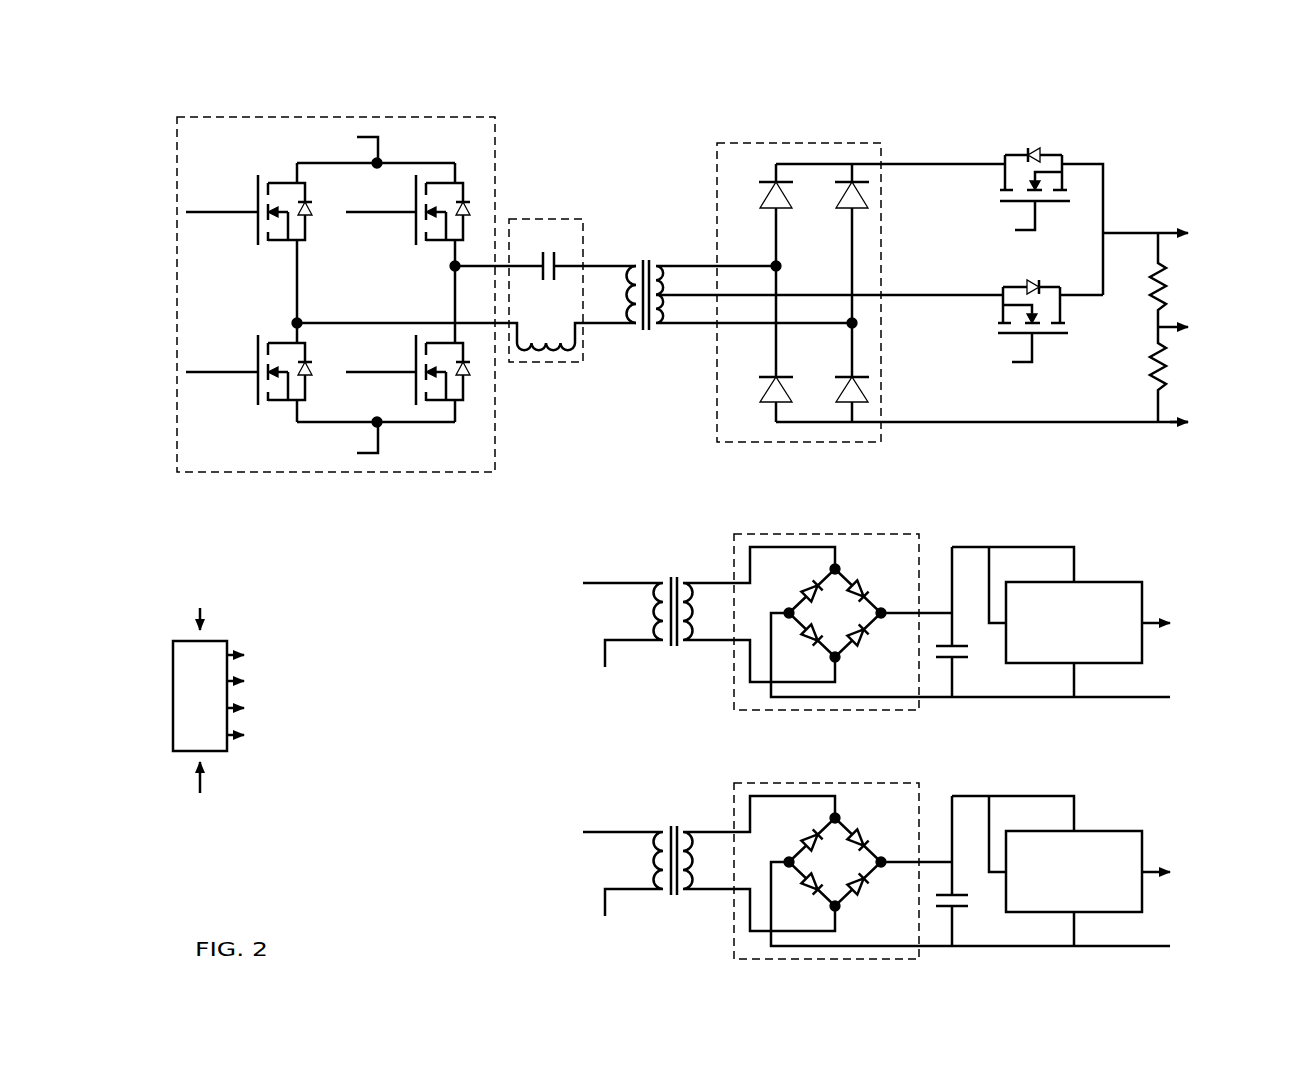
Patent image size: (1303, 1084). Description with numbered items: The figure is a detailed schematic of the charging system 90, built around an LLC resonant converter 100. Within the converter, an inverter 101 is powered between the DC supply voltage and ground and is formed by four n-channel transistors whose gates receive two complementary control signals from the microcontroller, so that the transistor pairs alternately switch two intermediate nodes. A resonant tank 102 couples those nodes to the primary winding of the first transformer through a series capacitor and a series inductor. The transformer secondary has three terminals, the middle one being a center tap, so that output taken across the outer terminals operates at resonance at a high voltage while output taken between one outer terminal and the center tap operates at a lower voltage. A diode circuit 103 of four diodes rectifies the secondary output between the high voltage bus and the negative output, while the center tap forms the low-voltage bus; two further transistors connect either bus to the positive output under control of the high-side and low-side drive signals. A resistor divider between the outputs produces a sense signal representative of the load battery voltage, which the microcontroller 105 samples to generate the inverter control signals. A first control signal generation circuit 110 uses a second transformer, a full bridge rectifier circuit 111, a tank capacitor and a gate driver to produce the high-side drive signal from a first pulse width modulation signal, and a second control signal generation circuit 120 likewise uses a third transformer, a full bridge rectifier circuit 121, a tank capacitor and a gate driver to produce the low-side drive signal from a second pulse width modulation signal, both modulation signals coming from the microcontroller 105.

The charging system 90 is at (136, 76).
The LLC resonant converter 100 is at (638, 111).
The inverter 101 is at (448, 117).
The resonant tank 102 is at (558, 219).
The diode circuit 103 is at (843, 142).
The microcontroller 105 is at (228, 641).
The first control signal generation circuit 110 is at (1082, 515).
The full bridge rectifier circuit 111 is at (826, 604).
The second control signal generation circuit 120 is at (1082, 757).
The full bridge rectifier circuit 121 is at (827, 853).